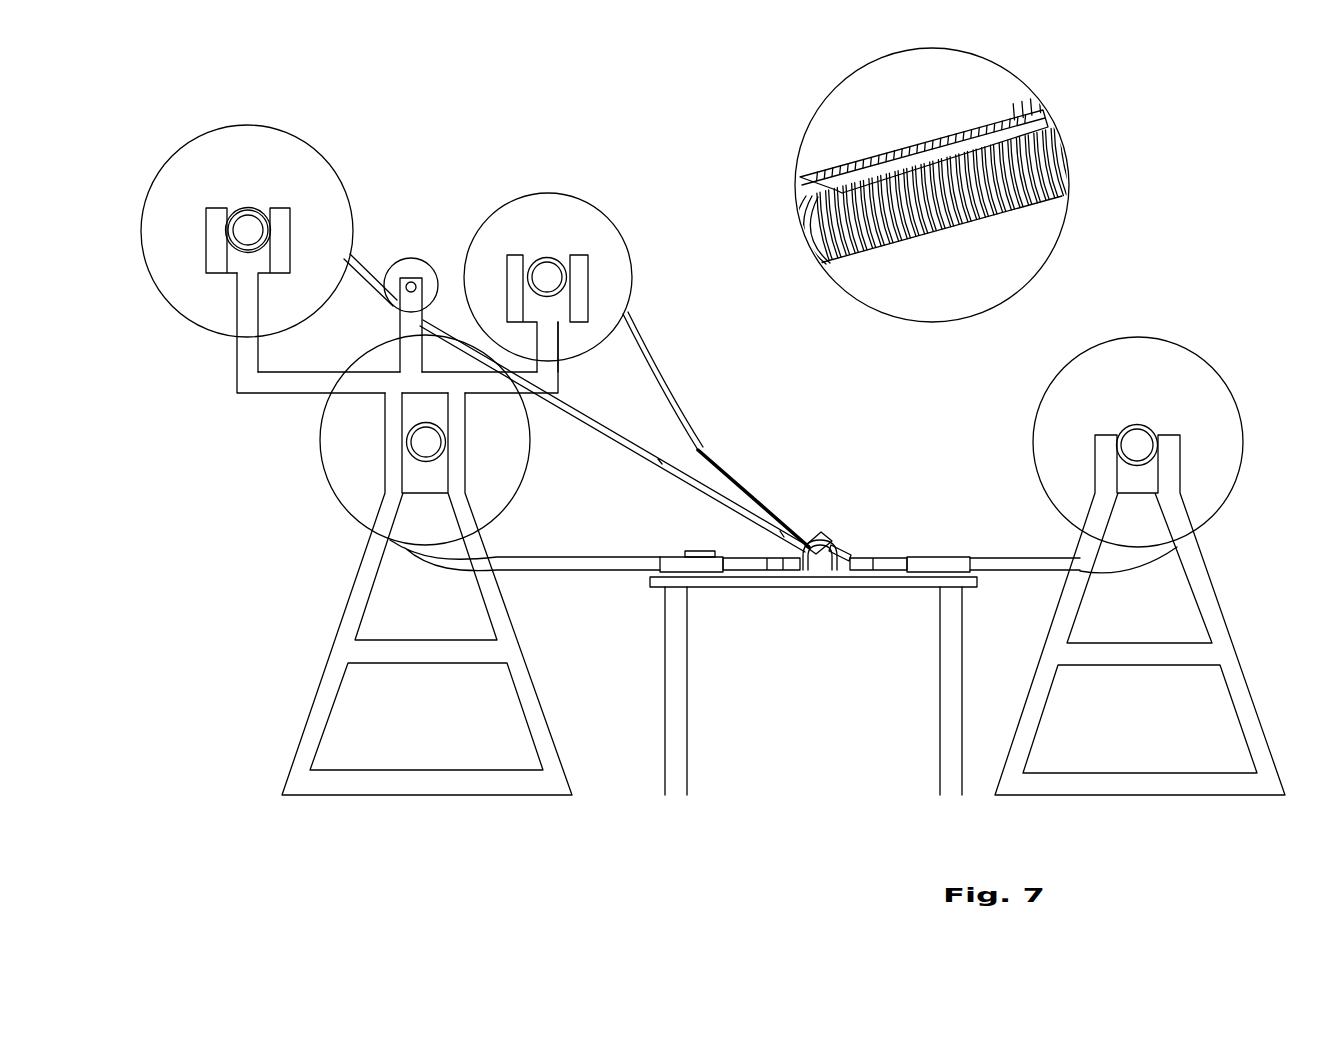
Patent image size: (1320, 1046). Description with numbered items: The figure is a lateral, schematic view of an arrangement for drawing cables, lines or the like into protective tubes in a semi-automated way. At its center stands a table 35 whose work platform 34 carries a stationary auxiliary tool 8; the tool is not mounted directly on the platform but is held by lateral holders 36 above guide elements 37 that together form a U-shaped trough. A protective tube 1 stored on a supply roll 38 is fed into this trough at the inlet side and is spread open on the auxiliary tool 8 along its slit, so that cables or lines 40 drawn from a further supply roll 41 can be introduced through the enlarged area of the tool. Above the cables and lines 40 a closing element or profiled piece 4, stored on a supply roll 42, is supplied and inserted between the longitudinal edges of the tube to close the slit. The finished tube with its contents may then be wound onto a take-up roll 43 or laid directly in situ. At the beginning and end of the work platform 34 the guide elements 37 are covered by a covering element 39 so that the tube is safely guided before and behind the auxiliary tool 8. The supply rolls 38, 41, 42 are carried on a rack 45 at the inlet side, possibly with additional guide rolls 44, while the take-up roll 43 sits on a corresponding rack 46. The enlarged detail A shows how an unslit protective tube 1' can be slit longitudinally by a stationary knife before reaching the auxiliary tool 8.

The protective tube 1 is at (783, 584).
The unslit protective tube 1' is at (935, 178).
The closing element/profiled piece 4 is at (678, 413).
The auxiliary tool 8 is at (830, 540).
The work platform 34 is at (800, 587).
The table 35 is at (665, 675).
The lateral holder 36 is at (840, 547).
The guide element 37 is at (737, 558).
The supply roll 38 is at (337, 467).
The covering element 39 is at (678, 557).
The cables or lines 40 is at (598, 436).
The supply roll 41 is at (167, 273).
The supply roll 42 is at (608, 238).
The take-up roll 43 is at (1213, 377).
The guide roll 44 is at (422, 258).
The rack 45 is at (330, 650).
The rack 46 is at (1232, 633).
The detail A is at (969, 185).